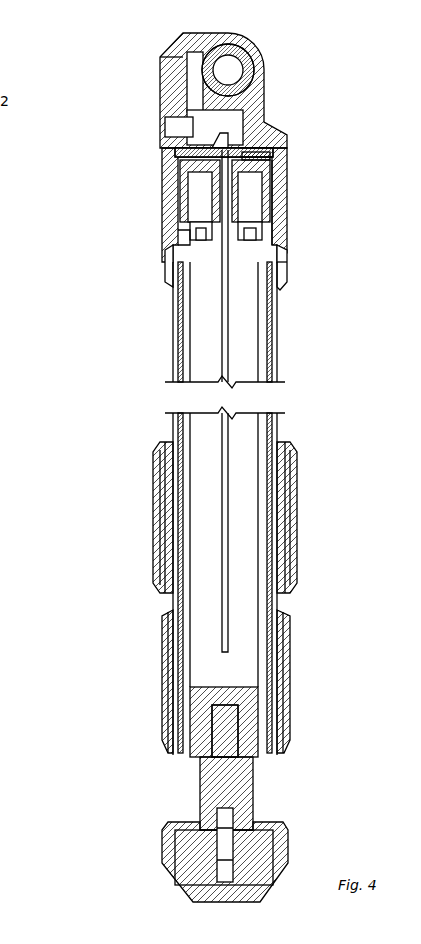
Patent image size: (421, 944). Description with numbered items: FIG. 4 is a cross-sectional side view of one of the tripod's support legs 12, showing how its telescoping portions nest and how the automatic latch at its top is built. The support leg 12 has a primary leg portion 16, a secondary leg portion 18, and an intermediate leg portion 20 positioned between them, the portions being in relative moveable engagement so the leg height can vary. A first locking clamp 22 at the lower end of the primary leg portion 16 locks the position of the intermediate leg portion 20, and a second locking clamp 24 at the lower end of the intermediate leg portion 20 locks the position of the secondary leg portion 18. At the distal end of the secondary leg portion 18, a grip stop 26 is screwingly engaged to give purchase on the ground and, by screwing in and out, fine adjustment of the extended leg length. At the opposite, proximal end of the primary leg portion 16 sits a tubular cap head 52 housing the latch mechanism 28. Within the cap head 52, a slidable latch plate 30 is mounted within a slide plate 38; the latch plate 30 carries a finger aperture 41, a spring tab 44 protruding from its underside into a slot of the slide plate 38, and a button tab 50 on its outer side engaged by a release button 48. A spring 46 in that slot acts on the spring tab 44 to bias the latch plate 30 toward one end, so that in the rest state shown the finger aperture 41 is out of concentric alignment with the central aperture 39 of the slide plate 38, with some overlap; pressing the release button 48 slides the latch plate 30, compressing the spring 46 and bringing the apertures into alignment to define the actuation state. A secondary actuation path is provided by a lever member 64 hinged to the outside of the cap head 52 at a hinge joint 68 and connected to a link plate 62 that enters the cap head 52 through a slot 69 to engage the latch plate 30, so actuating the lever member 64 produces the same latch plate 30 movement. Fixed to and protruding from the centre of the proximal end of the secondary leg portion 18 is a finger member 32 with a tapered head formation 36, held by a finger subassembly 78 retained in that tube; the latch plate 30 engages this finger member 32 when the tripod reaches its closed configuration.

The support leg 12 is at (70, 441).
The primary leg portion 16 is at (278, 358).
The secondary leg portion 18 is at (175, 333).
The intermediate leg portion 20 is at (278, 382).
The first locking clamp 22 is at (297, 527).
The second locking clamp 24 is at (290, 652).
The grip stop 26 is at (285, 843).
The latch mechanism 28 is at (291, 108).
The latch plate 30 is at (168, 156).
The finger member 32 is at (285, 255).
The tapered head formation 36 is at (220, 134).
The slide plate 38 is at (180, 165).
The central aperture 39 is at (178, 215).
The finger aperture 41 is at (180, 178).
The spring tab 44 is at (287, 175).
The spring 46 is at (288, 160).
The release button 48 is at (170, 128).
The button tab 50 is at (168, 148).
The cap head 52 is at (170, 278).
The link plate 62 is at (283, 147).
The lever member 64 is at (292, 238).
The hinge joint 68 is at (287, 200).
The slot 69 is at (283, 153).
The finger subassembly 78 is at (290, 205).